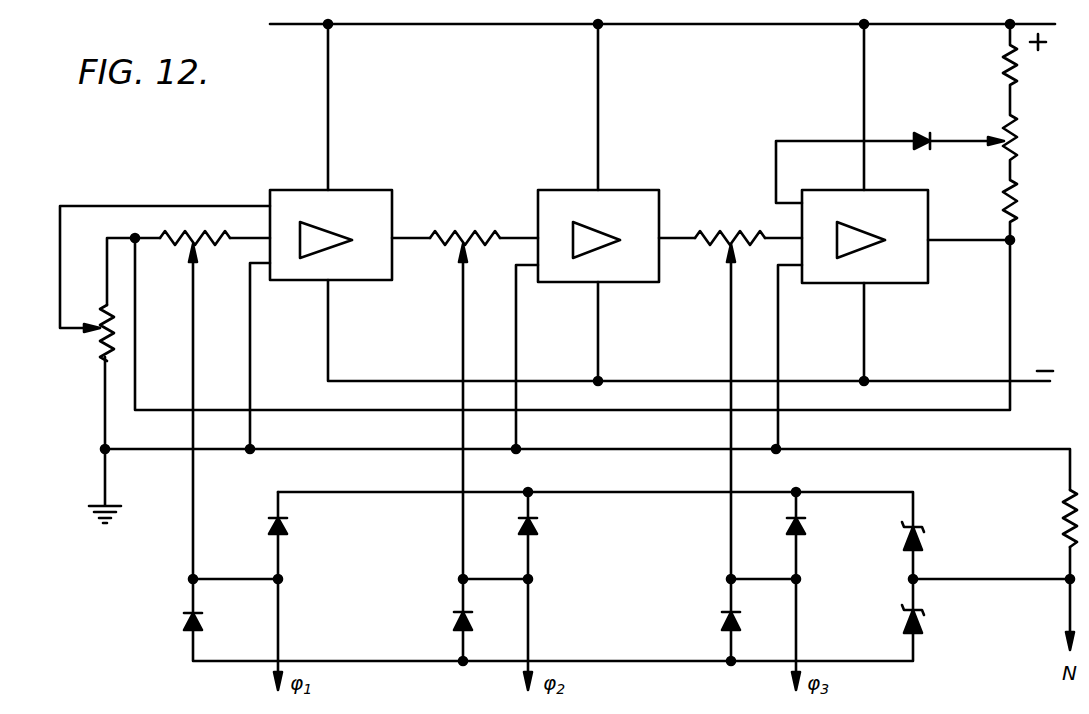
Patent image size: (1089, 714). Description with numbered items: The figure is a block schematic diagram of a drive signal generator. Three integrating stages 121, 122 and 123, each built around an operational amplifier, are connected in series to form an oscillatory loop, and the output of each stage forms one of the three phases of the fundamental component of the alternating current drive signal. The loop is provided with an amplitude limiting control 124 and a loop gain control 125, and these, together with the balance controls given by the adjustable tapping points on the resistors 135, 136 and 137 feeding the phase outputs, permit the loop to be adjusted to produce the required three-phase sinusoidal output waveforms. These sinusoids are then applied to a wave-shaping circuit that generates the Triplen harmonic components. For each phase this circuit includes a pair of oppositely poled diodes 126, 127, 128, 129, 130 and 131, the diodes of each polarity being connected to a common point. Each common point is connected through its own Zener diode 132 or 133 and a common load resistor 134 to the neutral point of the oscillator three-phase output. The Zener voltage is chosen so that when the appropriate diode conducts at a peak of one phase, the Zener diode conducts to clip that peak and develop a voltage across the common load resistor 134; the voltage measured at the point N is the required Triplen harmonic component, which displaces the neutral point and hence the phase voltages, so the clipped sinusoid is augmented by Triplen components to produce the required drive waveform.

The integrating stage 121 is at (359, 191).
The integrating stage 122 is at (619, 191).
The integrating stage 123 is at (887, 193).
The amplitude limiting control 124 is at (1017, 141).
The loop gain control 125 is at (100, 334).
The diode 126 is at (290, 525).
The diode 127 is at (452, 620).
The diode 128 is at (540, 527).
The diode 129 is at (720, 620).
The diode 130 is at (805, 527).
The diode 131 is at (182, 619).
The Zener diode 132 is at (922, 538).
The Zener diode 133 is at (922, 625).
The common load resistor 134 is at (1064, 513).
The resistor 135 is at (185, 253).
The resistor 136 is at (460, 230).
The resistor 137 is at (715, 230).